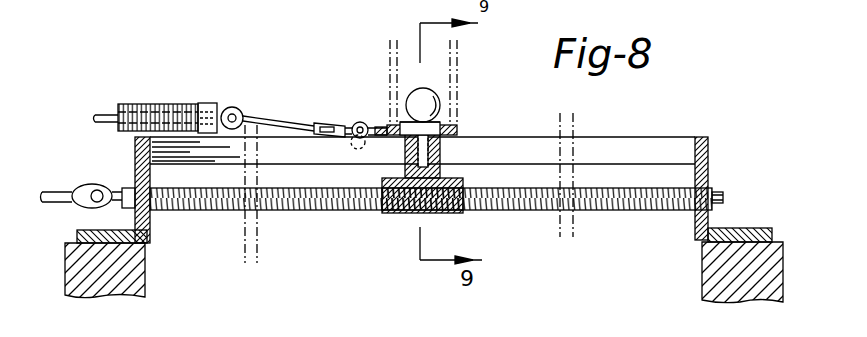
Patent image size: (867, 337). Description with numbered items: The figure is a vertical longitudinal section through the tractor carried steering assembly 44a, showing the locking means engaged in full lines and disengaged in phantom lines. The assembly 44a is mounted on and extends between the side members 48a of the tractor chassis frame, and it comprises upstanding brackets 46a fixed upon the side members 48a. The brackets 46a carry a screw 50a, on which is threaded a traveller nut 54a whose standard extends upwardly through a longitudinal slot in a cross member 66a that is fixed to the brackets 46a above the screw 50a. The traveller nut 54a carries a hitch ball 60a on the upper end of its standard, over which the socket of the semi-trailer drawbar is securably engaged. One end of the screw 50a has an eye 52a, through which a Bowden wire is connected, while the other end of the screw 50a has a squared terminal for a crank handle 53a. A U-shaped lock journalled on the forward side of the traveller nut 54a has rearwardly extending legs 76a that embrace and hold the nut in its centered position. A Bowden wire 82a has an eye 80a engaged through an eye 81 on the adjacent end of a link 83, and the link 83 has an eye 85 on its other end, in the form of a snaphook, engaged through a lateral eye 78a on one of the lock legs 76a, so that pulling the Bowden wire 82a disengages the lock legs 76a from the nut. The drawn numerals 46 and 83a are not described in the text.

The tractor carried steering assembly 44a is at (431, 246).
The left upright wall 46 is at (137, 160).
The upstanding brackets 46a is at (709, 176).
The side members 48a is at (113, 282).
The screw 50a is at (541, 261).
The eye 52a is at (100, 204).
The crank handle 53a is at (724, 197).
The traveller nut 54a is at (447, 173).
The hitch ball 60a is at (427, 90).
The cross member 66a is at (607, 145).
The lock legs 76a is at (458, 82).
The lateral eye 78a is at (362, 118).
The eye 80a is at (236, 106).
The eye 81 is at (252, 118).
The Bowden wire 82a is at (161, 100).
The link 83 is at (298, 124).
The spring rod 83a is at (54, 188).
The eye 85 is at (352, 122).